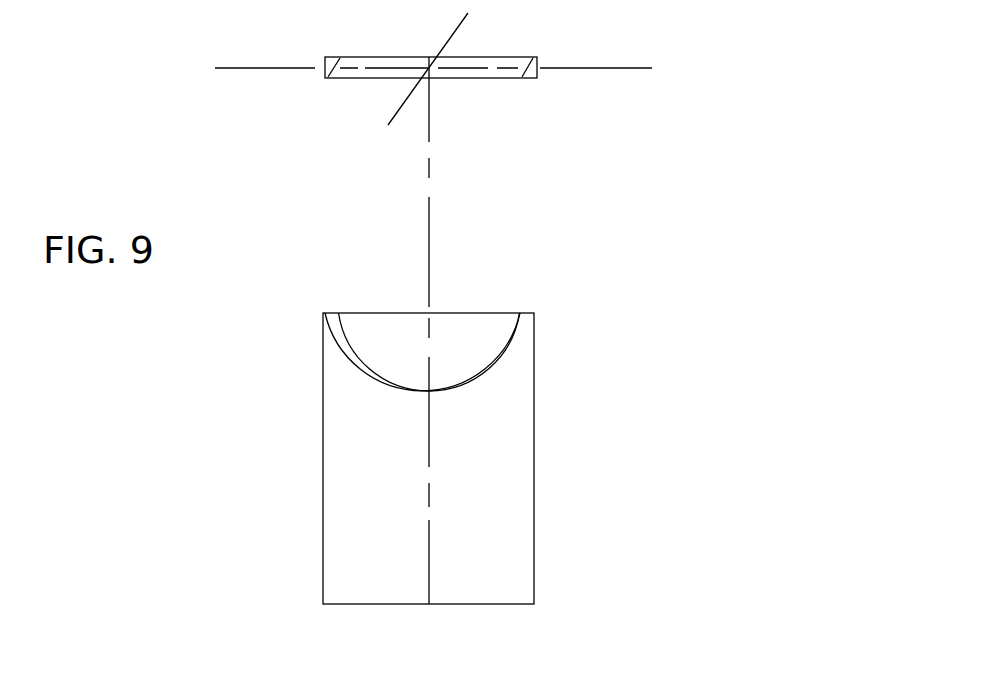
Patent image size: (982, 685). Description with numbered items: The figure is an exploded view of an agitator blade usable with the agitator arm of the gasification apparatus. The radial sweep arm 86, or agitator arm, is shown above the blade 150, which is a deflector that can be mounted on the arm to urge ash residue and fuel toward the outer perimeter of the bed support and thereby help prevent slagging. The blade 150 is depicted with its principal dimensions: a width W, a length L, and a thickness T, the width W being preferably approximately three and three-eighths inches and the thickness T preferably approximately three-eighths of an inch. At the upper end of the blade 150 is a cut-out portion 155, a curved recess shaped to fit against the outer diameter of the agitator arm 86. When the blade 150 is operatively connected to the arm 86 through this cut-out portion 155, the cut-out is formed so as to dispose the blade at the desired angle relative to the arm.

The radial sweep arm 86 is at (493, 70).
The blade 150 is at (308, 481).
The cut-out portion 155 is at (507, 350).
The thickness T is at (355, 330).
The width W is at (534, 618).
The length L is at (548, 313).